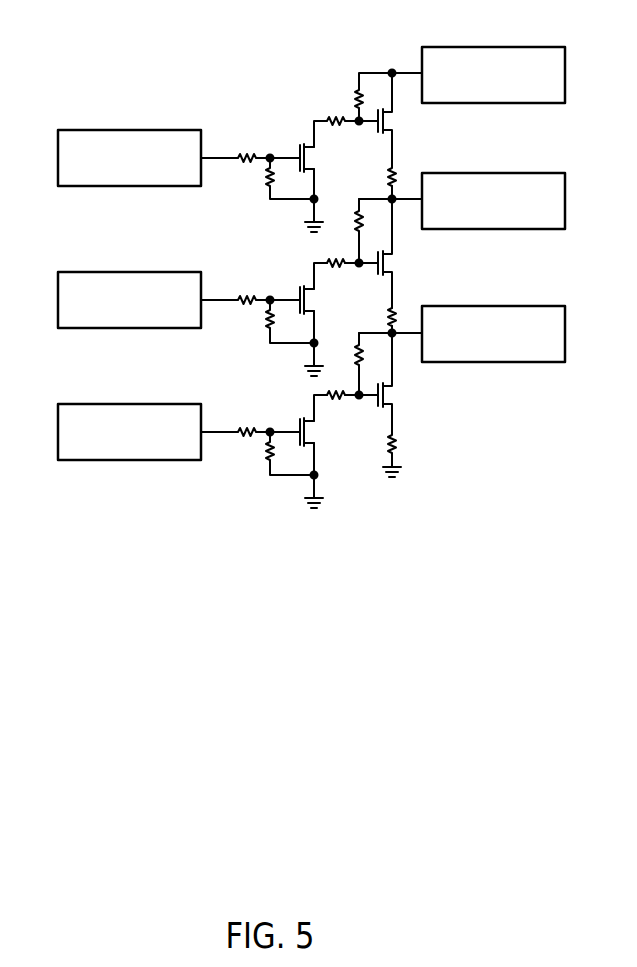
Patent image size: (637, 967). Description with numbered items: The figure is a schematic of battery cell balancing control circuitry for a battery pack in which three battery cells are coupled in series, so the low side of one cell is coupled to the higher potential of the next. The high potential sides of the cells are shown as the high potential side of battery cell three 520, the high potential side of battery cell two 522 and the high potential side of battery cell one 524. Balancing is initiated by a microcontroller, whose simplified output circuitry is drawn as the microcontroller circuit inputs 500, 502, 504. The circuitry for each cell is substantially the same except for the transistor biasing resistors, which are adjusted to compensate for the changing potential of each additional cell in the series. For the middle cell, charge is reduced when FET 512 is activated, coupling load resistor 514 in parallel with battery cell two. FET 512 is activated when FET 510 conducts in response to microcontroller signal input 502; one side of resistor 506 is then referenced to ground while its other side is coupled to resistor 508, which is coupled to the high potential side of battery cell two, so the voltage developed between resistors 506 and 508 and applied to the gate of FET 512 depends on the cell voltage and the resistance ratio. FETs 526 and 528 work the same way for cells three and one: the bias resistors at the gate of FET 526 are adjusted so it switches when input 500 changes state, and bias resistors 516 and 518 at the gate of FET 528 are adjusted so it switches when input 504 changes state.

The microcontroller circuit input 500 is at (65, 131).
The microcontroller signal input 502 is at (66, 273).
The microcontroller circuit input 504 is at (67, 405).
The resistor 506 is at (328, 258).
The resistor 508 is at (354, 218).
The FET 510 is at (299, 293).
The FET 512 is at (396, 258).
The load resistor 514 is at (398, 302).
The bias resistor 516 is at (354, 350).
The bias resistor 518 is at (328, 396).
The high potential side of battery cell 3 520 is at (549, 47).
The high potential side of battery cell 2 522 is at (549, 173).
The high potential side of battery cell 1 524 is at (535, 362).
The FET 526 is at (389, 126).
The FET 528 is at (392, 400).